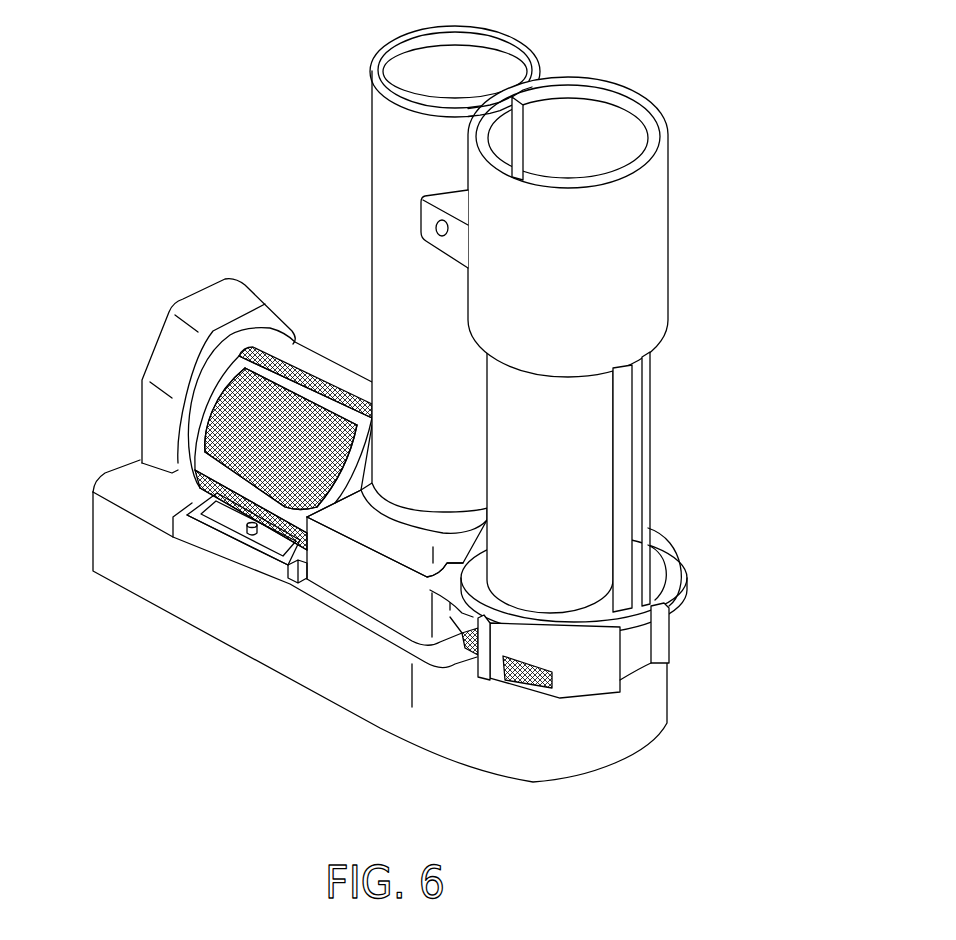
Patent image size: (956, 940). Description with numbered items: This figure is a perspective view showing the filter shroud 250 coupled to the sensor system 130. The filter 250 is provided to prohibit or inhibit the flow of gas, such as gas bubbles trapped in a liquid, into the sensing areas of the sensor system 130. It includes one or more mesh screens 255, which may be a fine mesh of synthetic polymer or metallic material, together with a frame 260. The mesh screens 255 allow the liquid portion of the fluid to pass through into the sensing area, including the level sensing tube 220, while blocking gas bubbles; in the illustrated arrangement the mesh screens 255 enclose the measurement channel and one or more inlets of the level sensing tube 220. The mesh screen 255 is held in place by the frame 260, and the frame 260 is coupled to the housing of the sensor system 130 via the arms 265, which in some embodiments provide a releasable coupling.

The sensor system 130 is at (235, 76).
The level sensing tube 220 is at (650, 420).
The filter shroud 250 is at (290, 268).
The mesh screens 255 is at (348, 370).
The frame 260 is at (198, 388).
The arms 265 is at (677, 618).